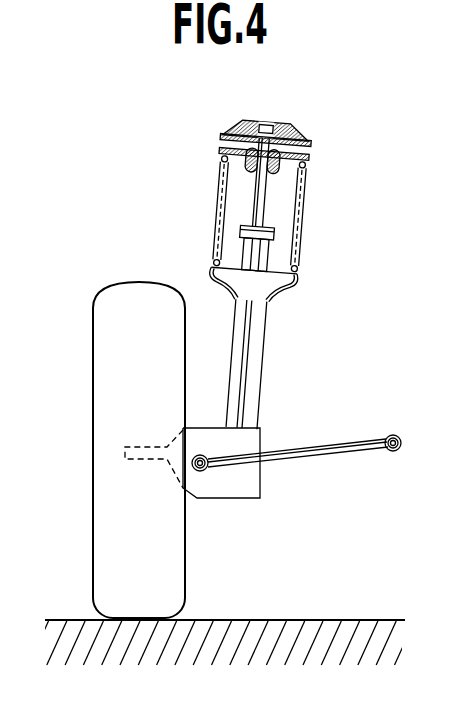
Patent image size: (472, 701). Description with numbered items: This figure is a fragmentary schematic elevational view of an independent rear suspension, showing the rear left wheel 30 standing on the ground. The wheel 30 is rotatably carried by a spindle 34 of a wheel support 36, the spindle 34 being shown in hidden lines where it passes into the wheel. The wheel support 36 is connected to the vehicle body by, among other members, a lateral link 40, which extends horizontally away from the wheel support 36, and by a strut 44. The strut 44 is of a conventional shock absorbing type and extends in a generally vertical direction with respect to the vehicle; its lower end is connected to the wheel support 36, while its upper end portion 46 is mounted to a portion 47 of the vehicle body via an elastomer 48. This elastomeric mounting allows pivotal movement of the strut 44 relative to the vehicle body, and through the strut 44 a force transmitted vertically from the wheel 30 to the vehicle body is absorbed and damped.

The rear left wheel 30 is at (100, 573).
The spindle 34 is at (139, 445).
The wheel support 36 is at (204, 495).
The lateral link 40 is at (331, 458).
The strut 44 is at (272, 356).
The upper end portion 46 is at (281, 124).
The portion of the vehicle body 47 is at (306, 136).
The elastomer 48 is at (258, 122).